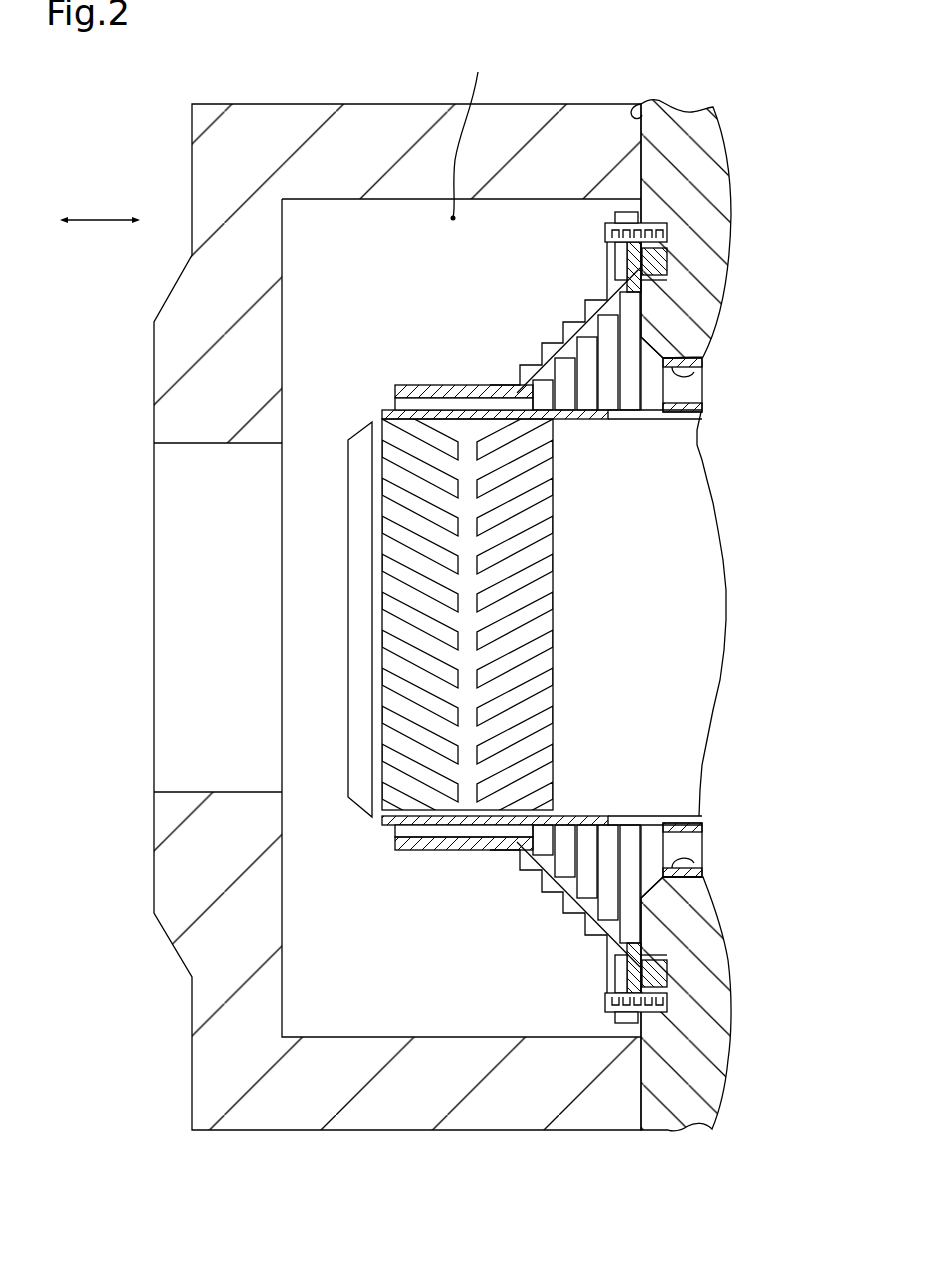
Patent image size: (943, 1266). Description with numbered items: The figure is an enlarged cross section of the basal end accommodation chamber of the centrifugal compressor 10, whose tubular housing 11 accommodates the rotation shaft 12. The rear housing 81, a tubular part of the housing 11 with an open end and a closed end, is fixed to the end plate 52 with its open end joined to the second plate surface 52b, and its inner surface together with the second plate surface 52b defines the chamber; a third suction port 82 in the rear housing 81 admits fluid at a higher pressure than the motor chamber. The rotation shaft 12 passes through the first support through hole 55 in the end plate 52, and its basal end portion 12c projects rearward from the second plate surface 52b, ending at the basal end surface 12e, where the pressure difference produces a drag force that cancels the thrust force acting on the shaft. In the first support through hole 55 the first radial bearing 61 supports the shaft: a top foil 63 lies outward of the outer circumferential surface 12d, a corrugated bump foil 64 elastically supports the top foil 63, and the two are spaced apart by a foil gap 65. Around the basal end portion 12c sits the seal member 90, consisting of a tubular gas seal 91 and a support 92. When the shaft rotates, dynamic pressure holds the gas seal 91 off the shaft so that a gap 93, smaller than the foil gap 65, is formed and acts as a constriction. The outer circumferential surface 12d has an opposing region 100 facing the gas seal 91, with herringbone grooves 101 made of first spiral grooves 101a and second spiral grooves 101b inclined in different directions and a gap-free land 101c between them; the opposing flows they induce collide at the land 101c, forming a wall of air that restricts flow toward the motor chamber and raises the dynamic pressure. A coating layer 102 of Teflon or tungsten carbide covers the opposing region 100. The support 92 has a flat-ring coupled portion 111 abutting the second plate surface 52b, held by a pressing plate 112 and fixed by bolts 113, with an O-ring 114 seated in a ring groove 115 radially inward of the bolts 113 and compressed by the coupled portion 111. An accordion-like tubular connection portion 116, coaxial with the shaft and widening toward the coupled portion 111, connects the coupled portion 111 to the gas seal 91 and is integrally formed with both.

The centrifugal compressor 10 is at (162, 93).
The housing 11 is at (266, 100).
The rear housing 81 is at (210, 162).
The third suction port 82 is at (180, 445).
The rotation shaft 12 is at (678, 452).
The basal end portion 12c is at (578, 490).
The outer circumferential surface 12d is at (482, 418).
The basal end surface 12e is at (348, 752).
The end plate 52 is at (683, 116).
The second plate surface 52b is at (632, 110).
The first support through hole 55 is at (670, 370).
The first radial bearing 61 is at (750, 805).
The top foil 63 is at (680, 821).
The bump foil 64 is at (680, 870).
The foil gap 65 is at (672, 852).
The seal member 90 is at (404, 382).
The gas seal 91 is at (432, 385).
The support 92 is at (548, 235).
The gap 93 is at (466, 405).
The opposing region 100 is at (466, 503).
The grooves 101 is at (608, 545).
The first spiral grooves 101a is at (515, 598).
The second spiral grooves 101b is at (445, 548).
The land 101c is at (470, 693).
The coating layer 102 is at (390, 411).
The coupled portion 111 is at (633, 250).
The pressing plate 112 is at (625, 220).
The bolts 113 is at (607, 231).
The O-ring 114 is at (668, 262).
The ring groove 115 is at (668, 281).
The connection portion 116 is at (572, 332).